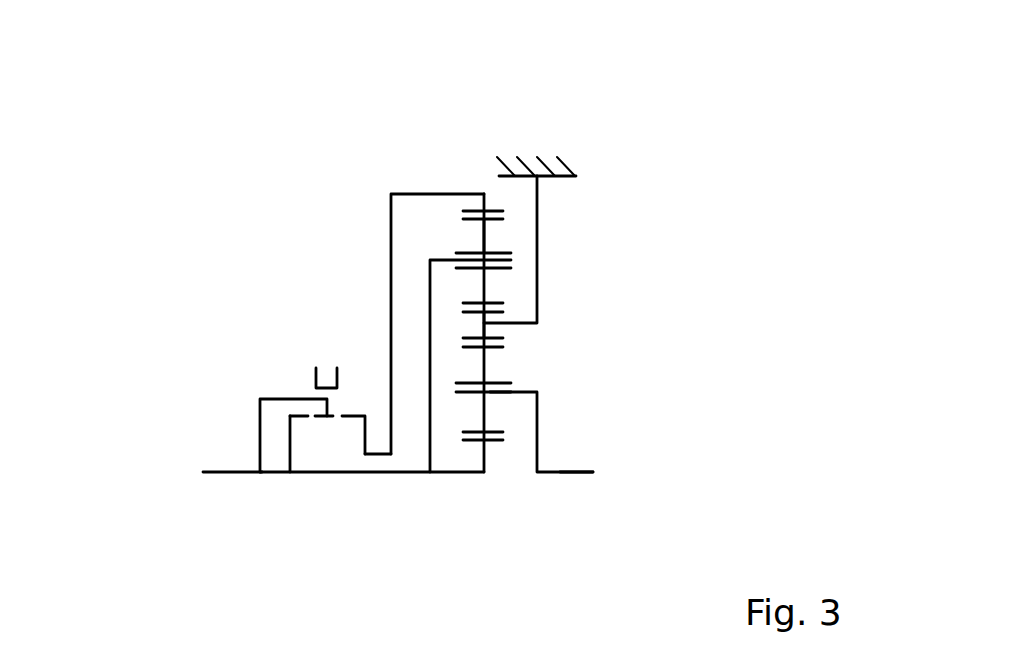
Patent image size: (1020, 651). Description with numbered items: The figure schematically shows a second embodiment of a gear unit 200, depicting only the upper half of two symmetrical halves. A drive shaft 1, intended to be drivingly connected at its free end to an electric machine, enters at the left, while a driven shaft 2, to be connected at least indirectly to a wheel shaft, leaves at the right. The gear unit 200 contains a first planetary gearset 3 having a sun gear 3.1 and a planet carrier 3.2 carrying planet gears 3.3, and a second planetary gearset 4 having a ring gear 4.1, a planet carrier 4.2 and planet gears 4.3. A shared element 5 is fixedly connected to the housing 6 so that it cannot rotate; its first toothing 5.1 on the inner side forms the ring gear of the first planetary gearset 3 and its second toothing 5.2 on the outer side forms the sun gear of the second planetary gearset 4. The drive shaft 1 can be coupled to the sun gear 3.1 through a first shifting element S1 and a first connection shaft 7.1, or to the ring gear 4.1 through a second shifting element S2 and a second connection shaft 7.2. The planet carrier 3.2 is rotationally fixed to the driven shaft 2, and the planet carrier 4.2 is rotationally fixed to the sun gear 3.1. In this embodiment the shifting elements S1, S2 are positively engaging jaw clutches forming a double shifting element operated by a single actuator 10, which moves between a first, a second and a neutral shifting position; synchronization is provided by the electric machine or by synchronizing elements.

The gear unit 200 is at (183, 130).
The drive shaft 1 is at (232, 472).
The driven shaft 2 is at (577, 473).
The first planetary gearset 3 is at (517, 375).
The sun gear 3.1 is at (490, 440).
The planet carrier 3.2 is at (528, 393).
The planet gears 3.3 is at (483, 413).
The second planetary gearset 4 is at (514, 249).
The ring gear 4.1 is at (472, 207).
The planet carrier 4.2 is at (443, 260).
The planet gears 4.3 is at (487, 237).
The shared element 5 is at (485, 330).
The first toothing 5.1 is at (503, 338).
The second toothing 5.2 is at (503, 313).
The housing 6 is at (547, 160).
The first connection shaft 7.1 is at (289, 446).
The second connection shaft 7.2 is at (390, 197).
The actuator 10 is at (318, 362).
The first shifting element S1 is at (298, 415).
The second shifting element S2 is at (355, 416).